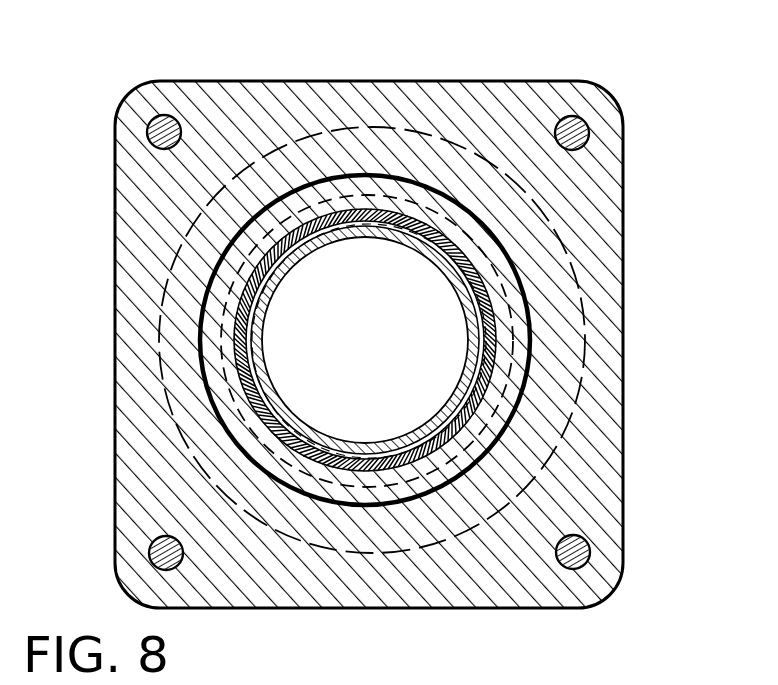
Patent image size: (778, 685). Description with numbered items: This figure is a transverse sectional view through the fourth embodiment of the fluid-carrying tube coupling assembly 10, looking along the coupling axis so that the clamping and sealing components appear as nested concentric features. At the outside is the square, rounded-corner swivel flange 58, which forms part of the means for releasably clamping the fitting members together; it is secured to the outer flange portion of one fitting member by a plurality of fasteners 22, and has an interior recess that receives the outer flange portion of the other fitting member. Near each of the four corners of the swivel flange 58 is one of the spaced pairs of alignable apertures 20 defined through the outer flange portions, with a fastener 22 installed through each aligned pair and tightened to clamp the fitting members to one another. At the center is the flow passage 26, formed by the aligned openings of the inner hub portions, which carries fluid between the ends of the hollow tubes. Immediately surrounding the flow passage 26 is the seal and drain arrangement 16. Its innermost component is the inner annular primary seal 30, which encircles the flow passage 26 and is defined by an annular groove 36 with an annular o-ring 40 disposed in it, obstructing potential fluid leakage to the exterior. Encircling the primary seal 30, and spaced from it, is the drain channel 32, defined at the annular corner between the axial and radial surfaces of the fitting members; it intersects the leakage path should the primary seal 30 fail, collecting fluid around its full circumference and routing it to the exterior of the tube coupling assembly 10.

The tube coupling assembly 10 is at (396, 308).
The seal and drain arrangement 16 is at (523, 298).
The alignable apertures 20 is at (168, 115).
The fasteners 22 is at (148, 132).
The flow passage 26 is at (358, 447).
The inner annular primary seal 30 is at (213, 336).
The drain channel 32 is at (530, 332).
The annular groove 36 is at (370, 212).
The annular o-ring 40 is at (225, 253).
The swivel flange 58 is at (625, 452).